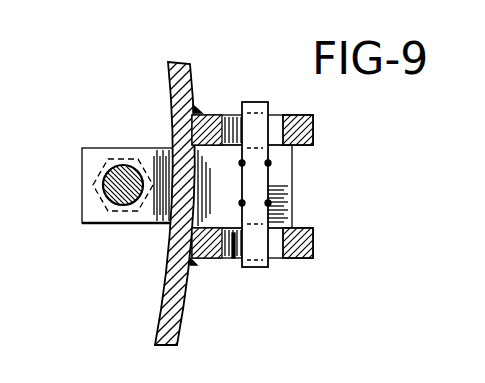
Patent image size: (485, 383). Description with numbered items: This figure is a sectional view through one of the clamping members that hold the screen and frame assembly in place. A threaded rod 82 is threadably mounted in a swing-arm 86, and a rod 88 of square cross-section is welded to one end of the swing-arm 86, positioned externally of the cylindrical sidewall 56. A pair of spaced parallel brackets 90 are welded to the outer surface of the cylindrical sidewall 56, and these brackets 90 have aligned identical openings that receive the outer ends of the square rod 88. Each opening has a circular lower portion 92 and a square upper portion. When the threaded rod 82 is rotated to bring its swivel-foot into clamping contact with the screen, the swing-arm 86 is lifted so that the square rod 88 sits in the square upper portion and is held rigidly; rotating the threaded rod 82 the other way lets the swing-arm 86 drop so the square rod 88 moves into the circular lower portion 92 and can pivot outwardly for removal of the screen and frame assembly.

The cylindrical sidewall 56 is at (177, 337).
The threaded rod 82 is at (122, 165).
The swing-arm 86 is at (92, 210).
The rod of square cross-section 88 is at (268, 263).
The brackets 90 is at (313, 127).
The circular lower portion 92 is at (234, 122).